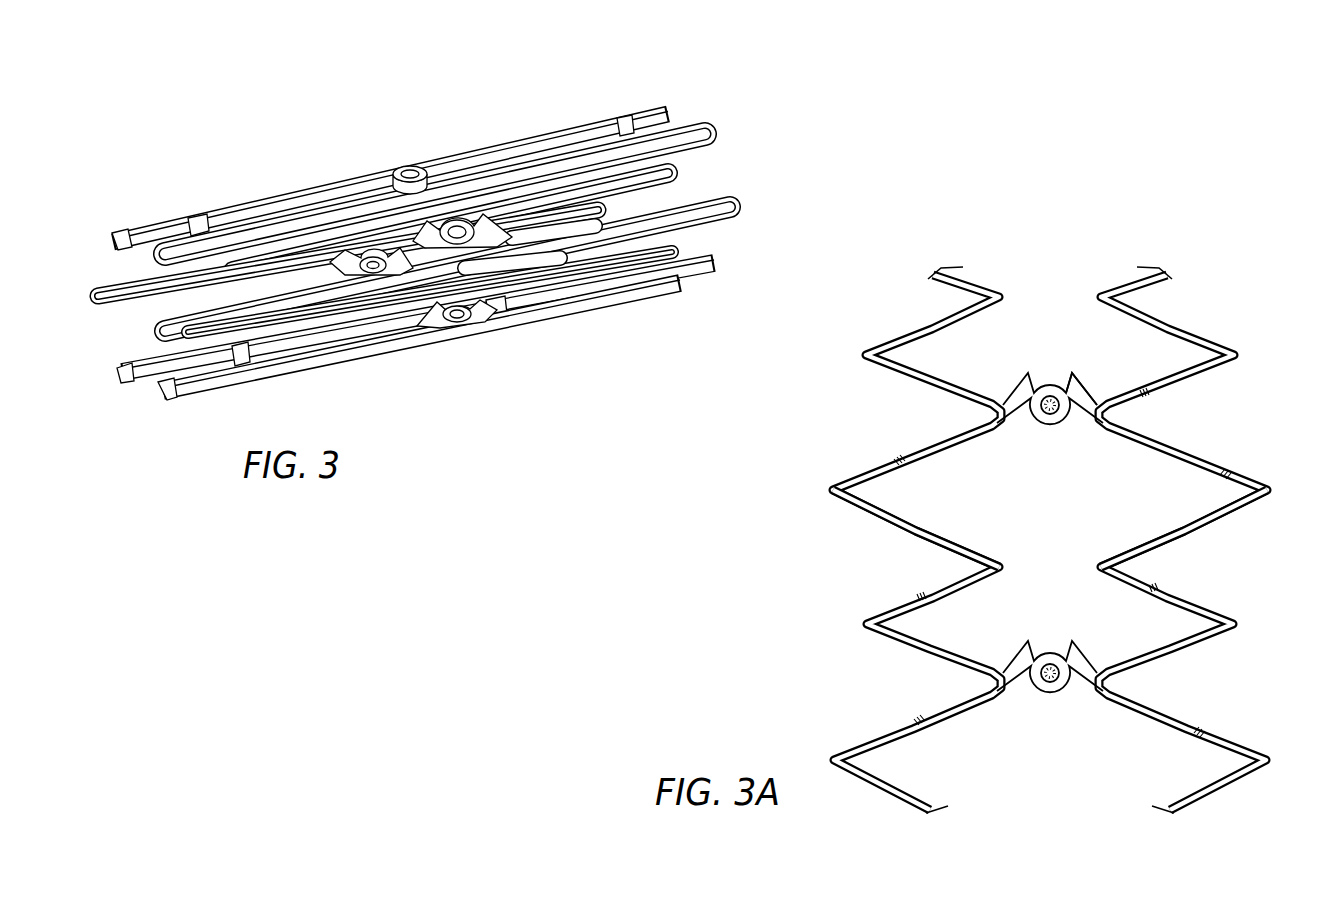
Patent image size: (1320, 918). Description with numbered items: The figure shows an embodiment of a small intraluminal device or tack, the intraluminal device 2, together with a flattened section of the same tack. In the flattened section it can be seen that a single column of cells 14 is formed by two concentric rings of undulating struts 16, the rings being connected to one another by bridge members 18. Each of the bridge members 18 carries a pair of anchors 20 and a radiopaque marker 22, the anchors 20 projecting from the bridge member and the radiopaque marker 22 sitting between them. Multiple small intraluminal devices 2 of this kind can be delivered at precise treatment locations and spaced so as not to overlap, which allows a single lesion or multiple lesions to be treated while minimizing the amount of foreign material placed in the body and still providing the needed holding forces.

In FIG. 3, the intraluminal device 2 is at (775, 176).
In FIG. 3A, the intraluminal device 2 is at (1050, 492).
In FIG. 3A, the cells 14 is at (1063, 560).
In FIG. 3A, the undulating struts 16 is at (887, 524).
In FIG. 3A, the bridge members 18 is at (1047, 352).
In FIG. 3A, the anchors 20 is at (1078, 378).
In FIG. 3A, the radiopaque marker 22 is at (1046, 418).